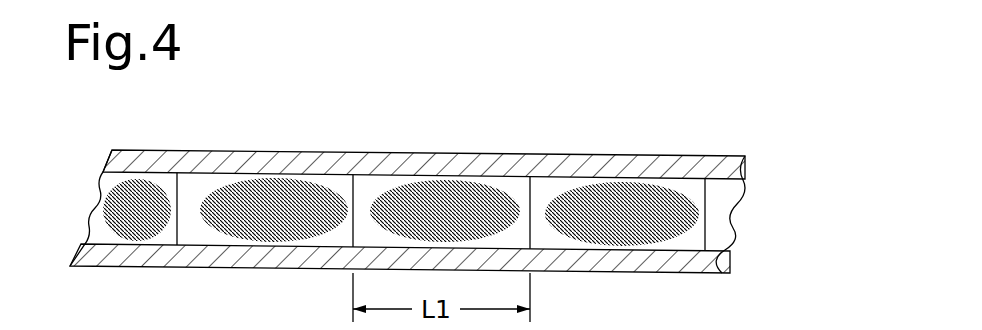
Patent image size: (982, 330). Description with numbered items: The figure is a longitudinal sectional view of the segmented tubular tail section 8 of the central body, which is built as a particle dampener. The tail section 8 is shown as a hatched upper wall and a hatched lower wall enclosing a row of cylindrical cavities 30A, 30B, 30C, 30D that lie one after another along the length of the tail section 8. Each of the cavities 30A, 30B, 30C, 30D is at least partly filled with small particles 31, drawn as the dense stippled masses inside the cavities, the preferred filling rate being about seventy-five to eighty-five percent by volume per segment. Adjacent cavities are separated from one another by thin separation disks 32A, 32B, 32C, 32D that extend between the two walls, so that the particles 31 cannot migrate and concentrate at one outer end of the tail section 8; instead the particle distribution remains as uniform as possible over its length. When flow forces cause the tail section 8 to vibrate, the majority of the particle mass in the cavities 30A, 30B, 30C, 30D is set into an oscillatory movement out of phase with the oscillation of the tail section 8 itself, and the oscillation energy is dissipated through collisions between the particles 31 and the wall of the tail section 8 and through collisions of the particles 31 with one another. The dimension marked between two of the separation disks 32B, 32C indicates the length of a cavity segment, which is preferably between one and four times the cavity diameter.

The tail section 8 is at (425, 167).
The cavity 30A is at (165, 180).
The cavity 30B is at (203, 178).
The cavity 30C is at (368, 180).
The cavity 30D is at (544, 180).
The particles 31 is at (122, 267).
The separation disk 32A is at (177, 232).
The separation disk 32B is at (352, 236).
The separation disk 32C is at (532, 228).
The separation disk 32D is at (705, 232).